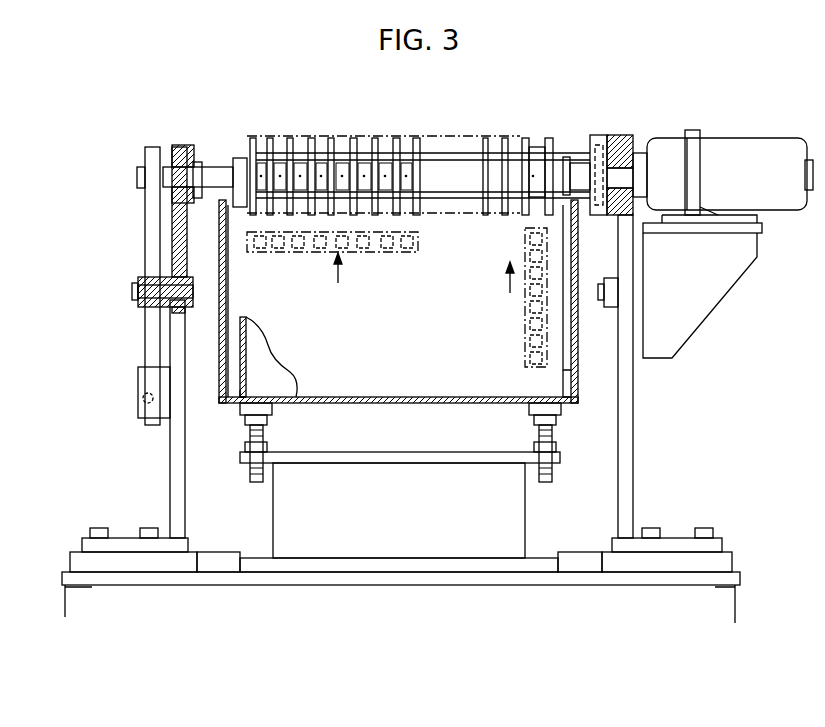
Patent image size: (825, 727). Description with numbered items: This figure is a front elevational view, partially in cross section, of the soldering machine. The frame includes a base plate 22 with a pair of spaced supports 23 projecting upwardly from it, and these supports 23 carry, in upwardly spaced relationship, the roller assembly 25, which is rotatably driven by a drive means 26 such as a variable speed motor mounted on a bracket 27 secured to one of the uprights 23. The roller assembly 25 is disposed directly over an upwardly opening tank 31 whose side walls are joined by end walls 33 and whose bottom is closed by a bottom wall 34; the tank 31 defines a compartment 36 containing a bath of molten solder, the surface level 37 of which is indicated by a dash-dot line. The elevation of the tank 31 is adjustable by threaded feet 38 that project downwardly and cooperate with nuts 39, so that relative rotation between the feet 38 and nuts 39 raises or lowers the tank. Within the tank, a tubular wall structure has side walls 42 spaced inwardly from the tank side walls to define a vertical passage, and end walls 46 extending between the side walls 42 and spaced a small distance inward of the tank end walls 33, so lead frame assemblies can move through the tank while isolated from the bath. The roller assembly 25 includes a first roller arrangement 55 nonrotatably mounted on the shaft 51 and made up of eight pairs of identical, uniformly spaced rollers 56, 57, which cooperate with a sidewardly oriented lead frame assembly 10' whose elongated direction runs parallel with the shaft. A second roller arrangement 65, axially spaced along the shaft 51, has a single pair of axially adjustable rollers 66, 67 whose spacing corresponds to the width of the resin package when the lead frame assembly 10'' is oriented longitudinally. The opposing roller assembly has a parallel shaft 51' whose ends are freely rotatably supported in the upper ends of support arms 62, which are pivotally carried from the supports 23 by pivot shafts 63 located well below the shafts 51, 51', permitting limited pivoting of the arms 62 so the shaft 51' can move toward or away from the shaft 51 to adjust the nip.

The sidewardly oriented lead frame assembly 10' is at (344, 259).
The longitudinally oriented lead frame assembly 10'' is at (508, 297).
The base plate 22 is at (497, 572).
The supports 23 is at (170, 472).
The roller assembly 25 is at (495, 113).
The drive means 26 is at (752, 140).
The bracket 27 is at (718, 298).
The tank 31 is at (503, 405).
The end walls 33 is at (217, 332).
The bottom wall 34 is at (375, 405).
The compartment 36 is at (270, 373).
The surface level 37 is at (230, 188).
The threaded feet 38 is at (248, 437).
The nuts 39 is at (268, 447).
The side walls 42 is at (426, 350).
The end walls 46 is at (240, 378).
The shaft 51 is at (198, 188).
The shaft 51' is at (113, 161).
The first roller arrangement 55 is at (318, 216).
The roller 56 is at (252, 140).
The roller 57 is at (270, 140).
The support arms 62 is at (147, 232).
The pivot shafts 63 is at (133, 291).
The second roller arrangement 65 is at (525, 218).
The roller 66 is at (525, 140).
The roller 67 is at (550, 140).